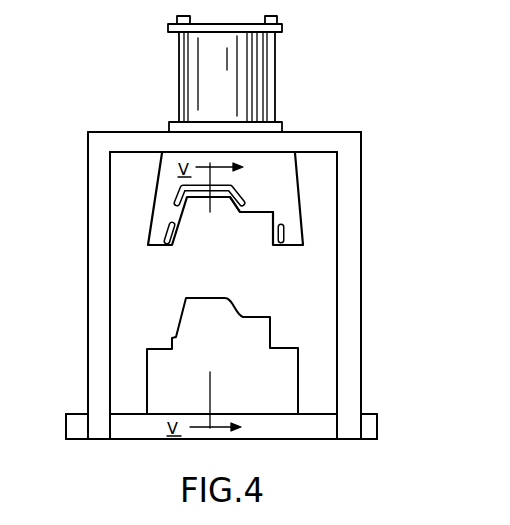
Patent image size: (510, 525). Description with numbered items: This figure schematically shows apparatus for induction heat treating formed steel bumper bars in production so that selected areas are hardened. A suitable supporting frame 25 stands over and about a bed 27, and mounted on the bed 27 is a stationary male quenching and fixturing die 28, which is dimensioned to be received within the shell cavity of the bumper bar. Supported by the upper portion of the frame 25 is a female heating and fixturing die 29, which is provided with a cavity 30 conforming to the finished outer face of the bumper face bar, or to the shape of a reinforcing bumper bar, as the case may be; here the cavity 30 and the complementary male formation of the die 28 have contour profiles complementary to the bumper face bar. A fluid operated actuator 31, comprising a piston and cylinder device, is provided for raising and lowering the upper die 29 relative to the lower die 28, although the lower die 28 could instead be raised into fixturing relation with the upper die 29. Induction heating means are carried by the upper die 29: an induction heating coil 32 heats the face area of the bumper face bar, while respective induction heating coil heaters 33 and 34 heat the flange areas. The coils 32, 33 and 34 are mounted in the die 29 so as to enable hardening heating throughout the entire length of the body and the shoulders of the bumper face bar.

The supporting frame 25 is at (96, 318).
The bed 27 is at (316, 427).
The male quenching and fixturing die 28 is at (261, 330).
The female heating and fixturing die 29 is at (158, 191).
The cavity 30 is at (241, 214).
The fluid operated actuator 31 is at (253, 79).
The induction heating coil 32 is at (243, 192).
The induction heating coil heater 33 is at (166, 233).
The induction heating coil heater 34 is at (286, 228).